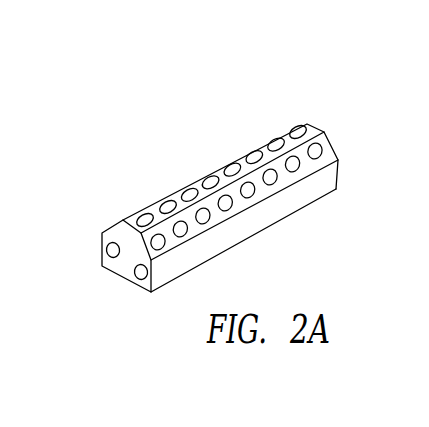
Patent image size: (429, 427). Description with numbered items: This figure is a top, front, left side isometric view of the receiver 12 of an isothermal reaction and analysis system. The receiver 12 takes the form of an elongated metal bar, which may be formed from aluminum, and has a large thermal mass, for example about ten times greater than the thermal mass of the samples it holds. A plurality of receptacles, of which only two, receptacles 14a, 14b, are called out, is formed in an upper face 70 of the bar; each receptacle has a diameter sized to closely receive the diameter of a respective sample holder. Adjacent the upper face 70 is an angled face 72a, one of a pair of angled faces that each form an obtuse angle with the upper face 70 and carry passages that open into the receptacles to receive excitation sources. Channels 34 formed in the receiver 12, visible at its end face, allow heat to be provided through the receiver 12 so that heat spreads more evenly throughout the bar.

The receiver 12 is at (230, 190).
The receptacle 14a is at (143, 215).
The receptacle 14b is at (167, 202).
The channel 34 is at (107, 251).
The upper face 70 is at (217, 151).
The angled face 72a is at (327, 143).